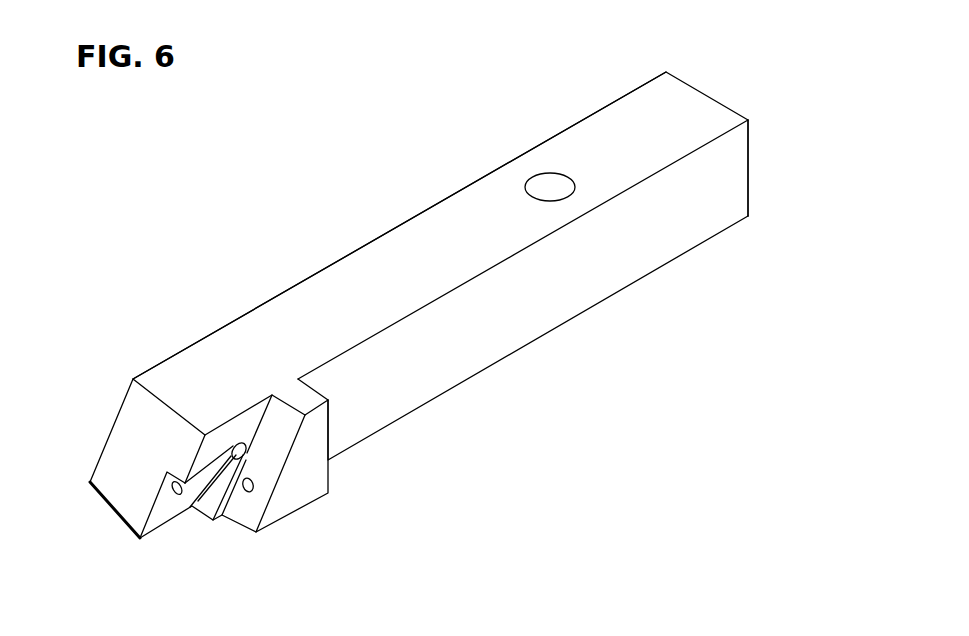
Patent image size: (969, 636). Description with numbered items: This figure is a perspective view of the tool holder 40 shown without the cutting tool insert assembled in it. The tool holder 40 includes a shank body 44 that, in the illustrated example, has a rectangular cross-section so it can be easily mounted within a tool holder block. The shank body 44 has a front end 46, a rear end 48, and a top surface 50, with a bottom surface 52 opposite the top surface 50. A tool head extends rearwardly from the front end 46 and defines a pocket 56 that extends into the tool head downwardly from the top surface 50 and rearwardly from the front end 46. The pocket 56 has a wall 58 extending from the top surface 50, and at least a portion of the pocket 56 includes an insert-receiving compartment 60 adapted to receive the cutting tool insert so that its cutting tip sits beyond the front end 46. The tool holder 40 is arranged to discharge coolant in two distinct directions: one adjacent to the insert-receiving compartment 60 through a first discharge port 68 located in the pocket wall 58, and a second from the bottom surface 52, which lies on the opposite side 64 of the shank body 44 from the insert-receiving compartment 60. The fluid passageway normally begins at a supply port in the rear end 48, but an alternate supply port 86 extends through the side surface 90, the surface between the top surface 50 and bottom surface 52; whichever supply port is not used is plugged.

The tool holder 40 is at (470, 233).
The shank body 44 is at (507, 337).
The front end 46 is at (112, 466).
The rear end 48 is at (748, 165).
The top surface 50 is at (610, 278).
The bottom surface 52 is at (293, 288).
The pocket 56 is at (158, 532).
The wall 58 is at (295, 487).
The insert-receiving compartment 60 is at (167, 514).
The opposite side 64 is at (115, 420).
The first discharge port 68 is at (253, 484).
The supply port 86 is at (548, 176).
The side surface 90 is at (632, 107).